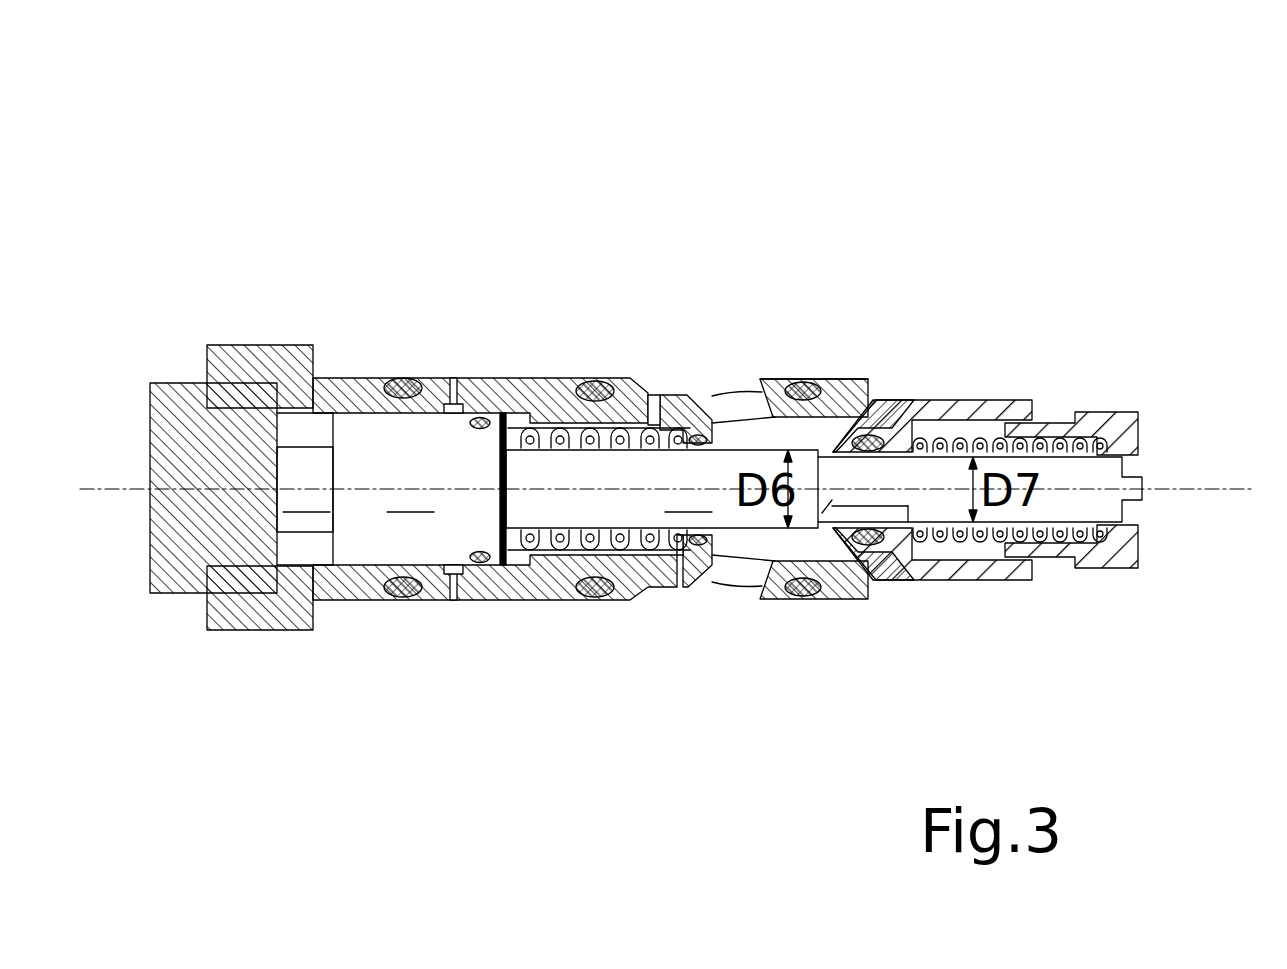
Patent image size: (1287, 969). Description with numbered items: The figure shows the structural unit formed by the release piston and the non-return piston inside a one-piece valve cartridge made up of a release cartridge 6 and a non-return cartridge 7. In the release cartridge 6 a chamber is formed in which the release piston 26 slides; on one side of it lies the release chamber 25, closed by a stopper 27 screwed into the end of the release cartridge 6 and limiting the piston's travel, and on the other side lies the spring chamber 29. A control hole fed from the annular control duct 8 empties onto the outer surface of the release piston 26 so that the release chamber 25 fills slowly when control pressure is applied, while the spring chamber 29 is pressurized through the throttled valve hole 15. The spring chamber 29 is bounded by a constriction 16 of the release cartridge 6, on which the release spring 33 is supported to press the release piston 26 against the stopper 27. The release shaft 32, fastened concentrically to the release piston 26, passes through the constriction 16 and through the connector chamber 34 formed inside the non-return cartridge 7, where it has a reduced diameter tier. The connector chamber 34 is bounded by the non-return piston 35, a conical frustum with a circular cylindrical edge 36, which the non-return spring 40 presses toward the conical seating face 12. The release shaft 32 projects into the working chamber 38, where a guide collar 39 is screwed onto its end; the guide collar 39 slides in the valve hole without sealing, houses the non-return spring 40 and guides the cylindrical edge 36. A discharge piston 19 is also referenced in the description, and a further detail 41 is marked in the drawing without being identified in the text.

The release cartridge 6 is at (512, 308).
The non-return cartridge 7 is at (812, 291).
The annular control duct 8 is at (490, 308).
The conical surface 12 is at (835, 306).
The throttled valve hole 15 is at (480, 279).
The constriction 16 is at (1092, 315).
The discharge piston 19 is at (305, 545).
The release chamber 25 is at (324, 359).
The release piston 26 is at (386, 489).
The stopper 27 is at (192, 389).
The spring chamber 29 is at (525, 584).
The release shaft 32 is at (824, 489).
The release spring 33 is at (599, 589).
The connector chamber 34 is at (748, 296).
The non-return piston 35 is at (876, 376).
The circular cylindrical edge 36 is at (932, 318).
The working chamber 38 is at (932, 622).
The guide collar 39 is at (1071, 630).
The non-return spring 40 is at (1010, 359).
The groove 41 is at (865, 614).